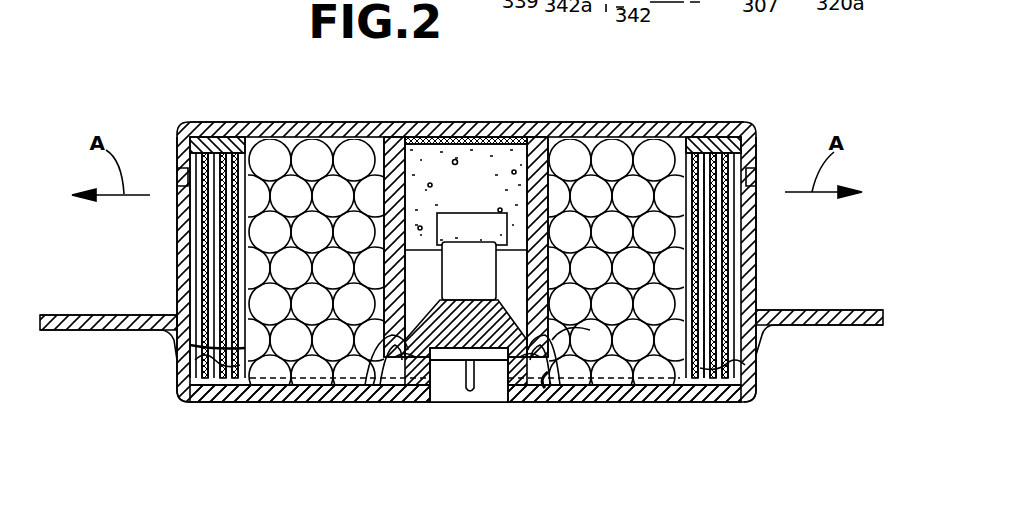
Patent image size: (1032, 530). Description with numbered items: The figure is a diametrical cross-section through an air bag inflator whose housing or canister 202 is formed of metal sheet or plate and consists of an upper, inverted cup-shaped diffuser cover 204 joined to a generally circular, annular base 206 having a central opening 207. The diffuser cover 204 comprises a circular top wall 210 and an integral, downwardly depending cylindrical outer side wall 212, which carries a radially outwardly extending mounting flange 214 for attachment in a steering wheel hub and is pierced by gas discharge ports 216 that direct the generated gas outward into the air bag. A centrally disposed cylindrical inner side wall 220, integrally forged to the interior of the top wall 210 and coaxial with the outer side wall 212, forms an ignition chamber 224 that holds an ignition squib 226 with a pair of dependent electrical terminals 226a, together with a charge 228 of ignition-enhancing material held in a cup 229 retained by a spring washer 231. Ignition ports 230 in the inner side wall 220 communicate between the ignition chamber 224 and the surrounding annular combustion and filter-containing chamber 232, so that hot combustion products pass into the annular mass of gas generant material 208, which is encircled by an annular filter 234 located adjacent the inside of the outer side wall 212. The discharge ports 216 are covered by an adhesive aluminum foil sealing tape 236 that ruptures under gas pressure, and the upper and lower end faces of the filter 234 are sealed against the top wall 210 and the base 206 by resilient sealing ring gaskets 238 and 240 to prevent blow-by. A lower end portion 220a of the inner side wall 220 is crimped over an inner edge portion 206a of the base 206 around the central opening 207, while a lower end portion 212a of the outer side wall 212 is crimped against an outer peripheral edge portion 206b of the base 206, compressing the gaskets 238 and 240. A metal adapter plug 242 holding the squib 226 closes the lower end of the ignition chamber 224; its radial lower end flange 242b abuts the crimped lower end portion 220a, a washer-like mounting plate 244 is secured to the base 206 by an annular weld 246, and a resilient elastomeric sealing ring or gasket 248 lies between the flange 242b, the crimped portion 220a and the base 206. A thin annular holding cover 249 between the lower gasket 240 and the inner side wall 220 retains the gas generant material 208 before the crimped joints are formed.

The housing or canister 202 is at (182, 406).
The diffuser cover 204 is at (750, 124).
The base 206 is at (268, 403).
The inner edge portion 206a is at (322, 386).
The outer peripheral edge portion 206b is at (222, 403).
The central opening 207 is at (472, 256).
The gas generant material 208 is at (234, 290).
The top wall 210 is at (263, 122).
The outer side wall 212 is at (182, 272).
The lower end portion of outer side wall 212a is at (205, 402).
The mounting flange 214 is at (70, 330).
The gas discharge ports 216 is at (178, 185).
The inner side wall 220 is at (532, 250).
The lower end portion of inner side wall 220a is at (398, 375).
The ignition chamber 224 is at (325, 332).
The ignition squib 226 is at (498, 372).
The electrical terminals 226a is at (466, 395).
The charge of ignition-enhancing material 228 is at (450, 165).
The cup 229 is at (466, 195).
The ignition ports 230 is at (548, 246).
The spring washer 231 is at (545, 278).
The combination combustion and filter-containing chamber 232 is at (312, 150).
The annular filter 234 is at (232, 232).
The sealing tape 236 is at (192, 202).
The sealing ring gasket 238 is at (212, 137).
The sealing ring gasket 240 is at (190, 360).
The adapter plug 242 is at (436, 402).
The lower end flange 242b is at (420, 402).
The mounting plate 244 is at (546, 402).
The annular weld 246 is at (372, 385).
The sealing ring or gasket 248 is at (385, 388).
The holding cover 249 is at (190, 350).